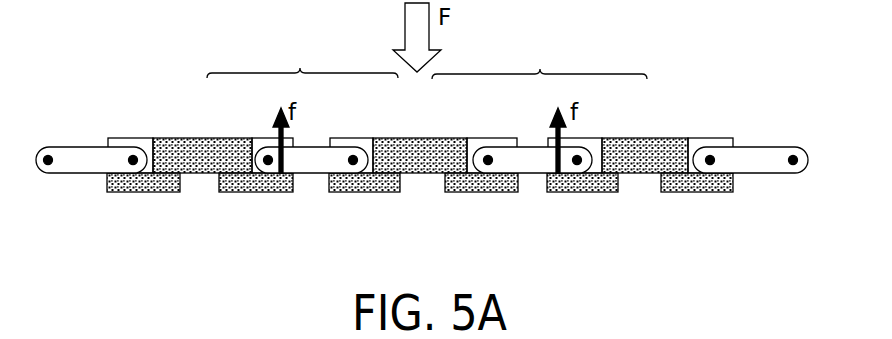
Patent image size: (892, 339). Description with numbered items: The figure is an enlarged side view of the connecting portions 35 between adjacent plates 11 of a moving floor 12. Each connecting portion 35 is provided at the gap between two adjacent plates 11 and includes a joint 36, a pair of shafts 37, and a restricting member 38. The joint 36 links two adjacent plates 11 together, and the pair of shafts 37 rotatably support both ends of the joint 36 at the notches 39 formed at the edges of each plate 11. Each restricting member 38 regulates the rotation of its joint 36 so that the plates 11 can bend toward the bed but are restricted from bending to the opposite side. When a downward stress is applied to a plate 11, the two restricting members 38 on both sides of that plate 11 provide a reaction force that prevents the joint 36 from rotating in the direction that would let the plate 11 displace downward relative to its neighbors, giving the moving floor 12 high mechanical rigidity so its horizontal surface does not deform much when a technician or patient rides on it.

The plate 11 is at (177, 138).
The moving floor 12 is at (113, 83).
The connecting portion 35 is at (427, 60).
The joint 36 is at (302, 147).
The shaft 37 is at (267, 138).
The restricting member 38 is at (257, 192).
The notch 39 is at (253, 137).